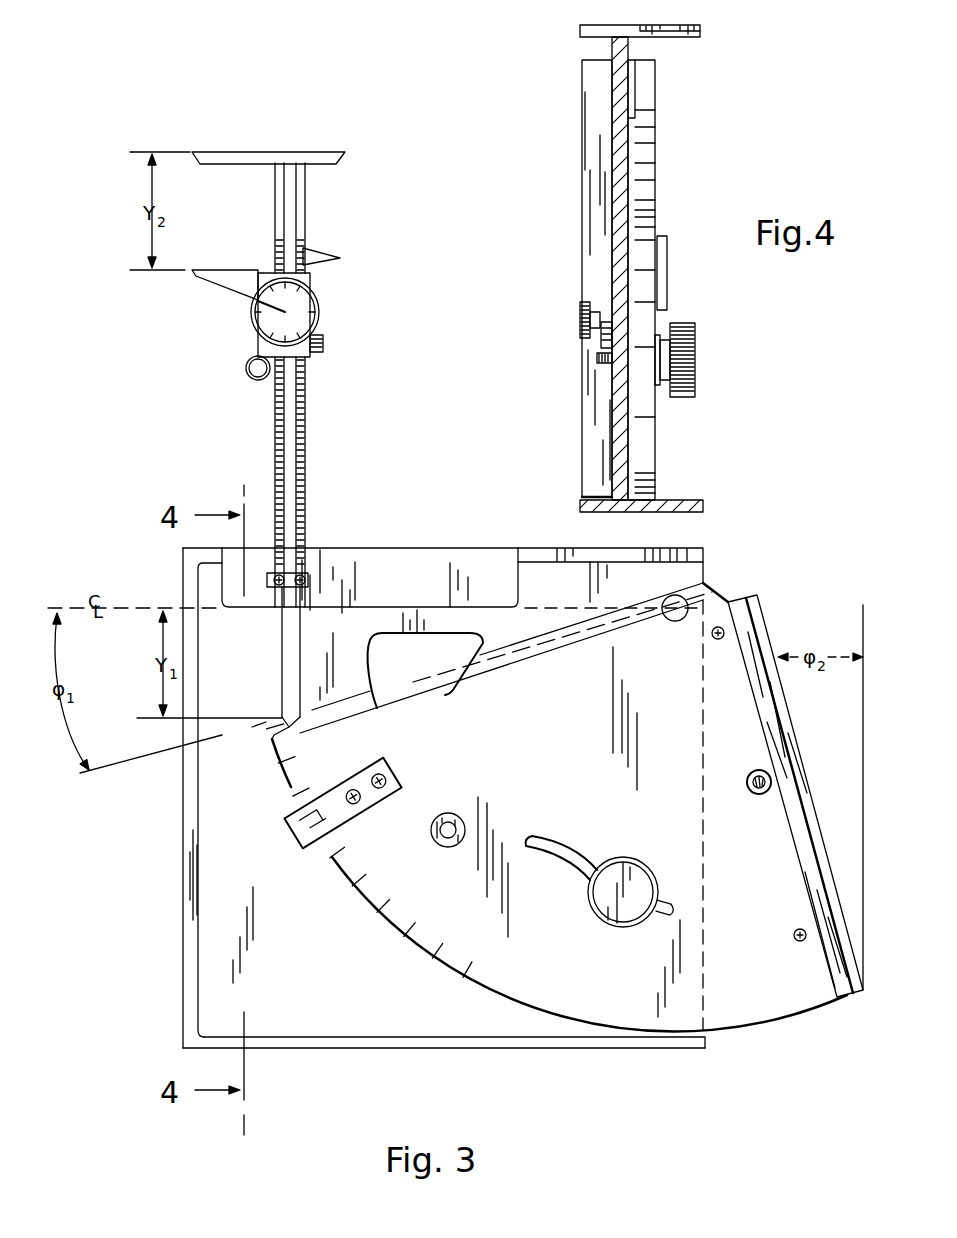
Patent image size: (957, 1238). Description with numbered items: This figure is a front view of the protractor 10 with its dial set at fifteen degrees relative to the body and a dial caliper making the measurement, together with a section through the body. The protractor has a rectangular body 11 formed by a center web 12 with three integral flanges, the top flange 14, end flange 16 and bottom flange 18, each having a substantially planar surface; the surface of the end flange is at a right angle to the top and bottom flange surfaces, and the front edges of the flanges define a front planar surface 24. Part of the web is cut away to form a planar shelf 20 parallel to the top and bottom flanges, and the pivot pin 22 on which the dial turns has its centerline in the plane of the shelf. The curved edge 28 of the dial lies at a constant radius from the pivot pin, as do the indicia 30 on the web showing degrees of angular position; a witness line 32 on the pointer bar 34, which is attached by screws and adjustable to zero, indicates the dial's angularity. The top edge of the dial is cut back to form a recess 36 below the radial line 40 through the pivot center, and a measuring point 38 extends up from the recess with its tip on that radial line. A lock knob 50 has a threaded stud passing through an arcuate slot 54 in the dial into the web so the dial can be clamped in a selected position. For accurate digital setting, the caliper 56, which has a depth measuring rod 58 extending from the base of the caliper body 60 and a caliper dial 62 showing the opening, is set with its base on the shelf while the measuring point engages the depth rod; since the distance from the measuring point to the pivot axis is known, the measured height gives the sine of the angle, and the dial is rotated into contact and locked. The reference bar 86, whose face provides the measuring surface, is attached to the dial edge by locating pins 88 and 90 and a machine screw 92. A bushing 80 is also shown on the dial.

In FIG. 3, the protractor 10 is at (149, 565).
In FIG. 3, the rectangular body 11 is at (186, 868).
In FIG. 3, the center web 12 is at (225, 922).
In FIG. 4, the center web 12 is at (612, 47).
In FIG. 3, the top flange 14 is at (700, 548).
In FIG. 4, the top flange 14 is at (590, 25).
In FIG. 3, the end flange 16 is at (186, 1005).
In FIG. 3, the bottom flange 18 is at (425, 1045).
In FIG. 4, the bottom flange 18 is at (680, 500).
In FIG. 3, the shelf 20 is at (378, 602).
In FIG. 4, the shelf 20 is at (630, 118).
In FIG. 3, the pivot pin 22 is at (680, 594).
In FIG. 4, the front planar surface 24 is at (702, 30).
In FIG. 3, the curved edge 28 is at (574, 1020).
In FIG. 3, the indicia 30 is at (325, 895).
In FIG. 3, the witness line 32 is at (315, 814).
In FIG. 3, the pointer bar 34 is at (390, 768).
In FIG. 3, the recess 36 is at (398, 700).
In FIG. 3, the measuring point 38 is at (280, 724).
In FIG. 3, the radial line 40 is at (147, 770).
In FIG. 3, the lock knob 50 is at (620, 933).
In FIG. 3, the arcuate slot 54 is at (548, 835).
In FIG. 3, the caliper 56 is at (258, 350).
In FIG. 3, the depth measuring rod 58 is at (290, 468).
In FIG. 3, the caliper body 60 is at (305, 518).
In FIG. 3, the caliper dial 62 is at (318, 306).
In FIG. 3, the bushing 80 is at (440, 847).
In FIG. 3, the reference bar 86 is at (800, 758).
In FIG. 3, the locating pin 88 is at (725, 636).
In FIG. 3, the locating pin 90 is at (795, 940).
In FIG. 3, the machine screw 92 is at (748, 785).